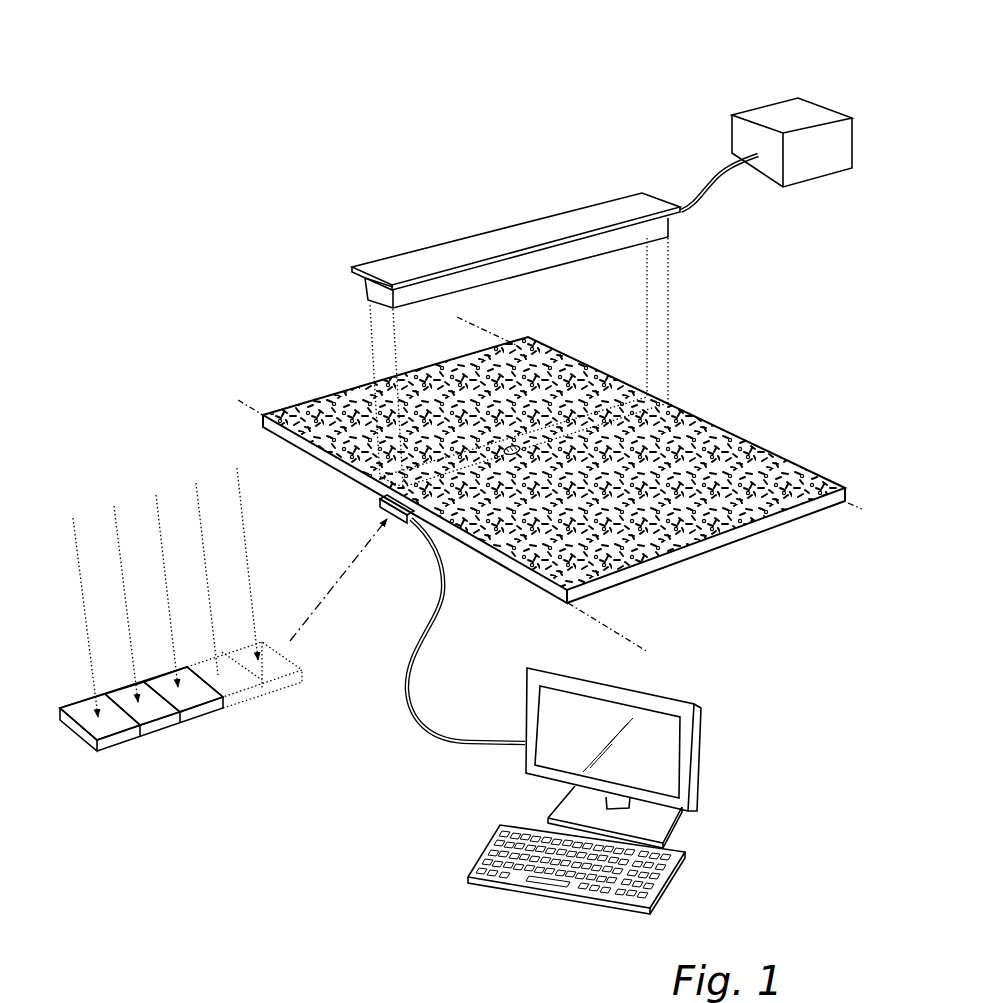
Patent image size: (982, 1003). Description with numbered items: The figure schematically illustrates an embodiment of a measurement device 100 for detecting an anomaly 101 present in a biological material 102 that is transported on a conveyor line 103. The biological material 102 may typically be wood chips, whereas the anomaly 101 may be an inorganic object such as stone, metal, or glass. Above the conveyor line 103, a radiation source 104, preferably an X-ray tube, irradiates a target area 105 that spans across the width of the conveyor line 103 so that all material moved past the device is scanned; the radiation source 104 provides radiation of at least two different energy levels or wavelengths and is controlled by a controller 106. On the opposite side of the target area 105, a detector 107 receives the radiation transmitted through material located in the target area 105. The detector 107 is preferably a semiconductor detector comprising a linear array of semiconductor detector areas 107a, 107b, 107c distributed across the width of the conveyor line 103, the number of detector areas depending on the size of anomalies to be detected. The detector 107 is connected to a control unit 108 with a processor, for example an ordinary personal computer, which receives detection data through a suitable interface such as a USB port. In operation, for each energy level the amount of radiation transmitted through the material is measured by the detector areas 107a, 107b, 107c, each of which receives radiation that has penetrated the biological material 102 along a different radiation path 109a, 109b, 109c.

The measurement device 100 is at (582, 97).
The anomaly 101 is at (514, 448).
The biological material 102 is at (667, 457).
The conveyor line 103 is at (675, 582).
The radiation source 104 is at (607, 238).
The target area 105 is at (605, 417).
The controller 106 is at (787, 83).
The detector 107 is at (367, 505).
The semiconductor detector area 107a is at (108, 728).
The semiconductor detector area 107b is at (153, 714).
The semiconductor detector area 107c is at (199, 698).
The control unit 108 is at (728, 763).
The radiation path 109a is at (74, 540).
The radiation path 109b is at (117, 530).
The radiation path 109c is at (158, 523).